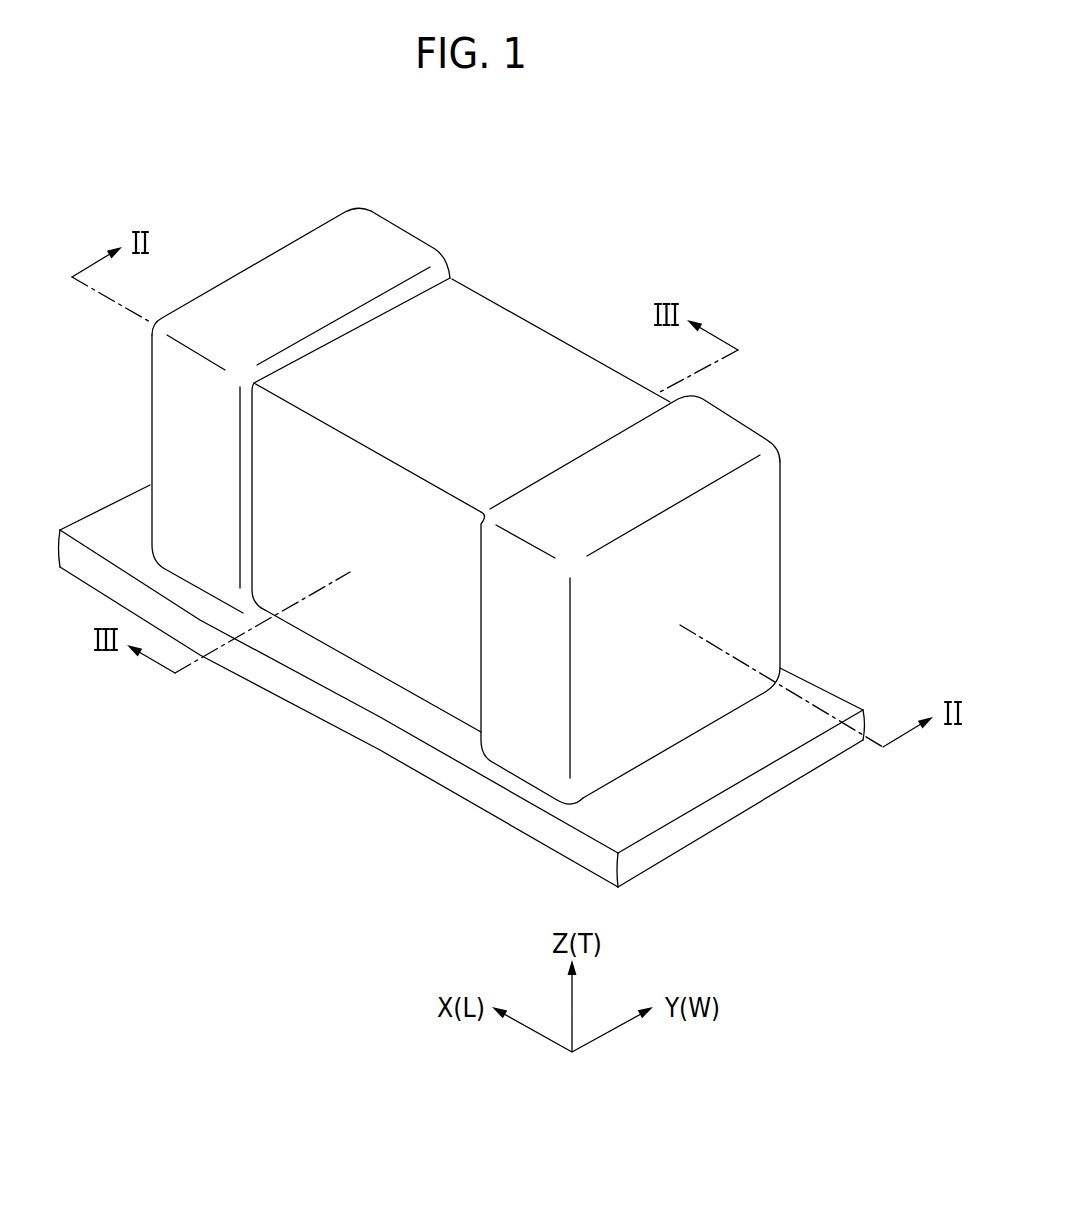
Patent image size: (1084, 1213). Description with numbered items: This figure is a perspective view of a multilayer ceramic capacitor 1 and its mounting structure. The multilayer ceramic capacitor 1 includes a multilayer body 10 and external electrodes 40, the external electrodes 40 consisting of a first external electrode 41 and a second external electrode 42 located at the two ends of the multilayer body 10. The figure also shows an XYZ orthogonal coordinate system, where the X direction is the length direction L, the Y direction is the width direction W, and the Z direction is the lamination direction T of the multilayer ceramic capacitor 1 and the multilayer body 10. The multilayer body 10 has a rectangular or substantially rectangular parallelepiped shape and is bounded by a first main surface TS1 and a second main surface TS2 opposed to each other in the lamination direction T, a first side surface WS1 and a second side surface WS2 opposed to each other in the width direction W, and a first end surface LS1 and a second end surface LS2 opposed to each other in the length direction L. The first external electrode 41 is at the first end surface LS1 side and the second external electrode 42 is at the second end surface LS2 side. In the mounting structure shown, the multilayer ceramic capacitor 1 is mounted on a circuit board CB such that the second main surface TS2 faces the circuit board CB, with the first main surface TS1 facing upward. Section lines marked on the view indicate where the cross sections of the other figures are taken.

The multilayer ceramic capacitor 1 is at (817, 275).
The multilayer body 10 is at (430, 358).
The external electrodes 40 is at (494, 510).
The first external electrode 41 is at (367, 240).
The second external electrode 42 is at (732, 435).
The circuit board CB is at (92, 525).
The first main surface TS1 is at (487, 396).
The second main surface TS2 is at (333, 646).
The first side surface WS1 is at (430, 680).
The second side surface WS2 is at (588, 356).
The first end surface LS1 is at (268, 251).
The second end surface LS2 is at (700, 700).